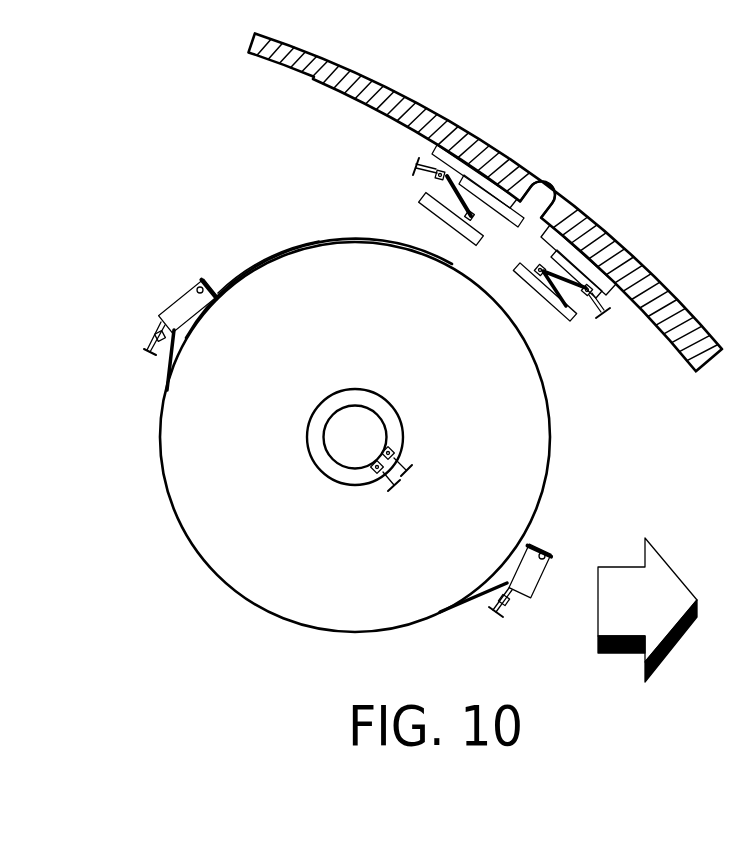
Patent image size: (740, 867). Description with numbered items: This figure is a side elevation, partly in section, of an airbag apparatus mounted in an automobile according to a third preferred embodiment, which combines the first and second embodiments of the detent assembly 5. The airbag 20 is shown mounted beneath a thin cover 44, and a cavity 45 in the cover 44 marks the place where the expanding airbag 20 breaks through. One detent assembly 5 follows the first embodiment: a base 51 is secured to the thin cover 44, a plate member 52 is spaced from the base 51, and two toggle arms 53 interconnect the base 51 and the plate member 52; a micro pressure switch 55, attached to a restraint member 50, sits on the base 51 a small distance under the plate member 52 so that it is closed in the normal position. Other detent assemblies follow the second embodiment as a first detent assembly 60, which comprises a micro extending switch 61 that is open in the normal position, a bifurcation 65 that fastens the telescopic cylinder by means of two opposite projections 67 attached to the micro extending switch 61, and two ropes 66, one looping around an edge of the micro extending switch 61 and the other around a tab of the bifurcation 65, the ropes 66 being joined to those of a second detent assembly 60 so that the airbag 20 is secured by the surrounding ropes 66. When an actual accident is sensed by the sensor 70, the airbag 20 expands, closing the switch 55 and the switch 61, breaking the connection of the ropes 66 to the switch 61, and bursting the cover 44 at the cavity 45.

The detent assembly 5 is at (588, 345).
The airbag 20 is at (298, 592).
The thin cover 44 is at (620, 253).
The cavity 45 is at (553, 198).
The restraint member 50 is at (402, 164).
The base 51 is at (452, 158).
The plate member 52 is at (442, 216).
The toggle arms 53 is at (497, 160).
The micro pressure switch 55 is at (520, 171).
The first detent assembly 60 is at (264, 250).
The micro extending switch 61 is at (185, 307).
The bifurcation 65 is at (200, 284).
The ropes 66 is at (218, 292).
The projections 67 is at (190, 291).
The sensor 70 is at (347, 441).